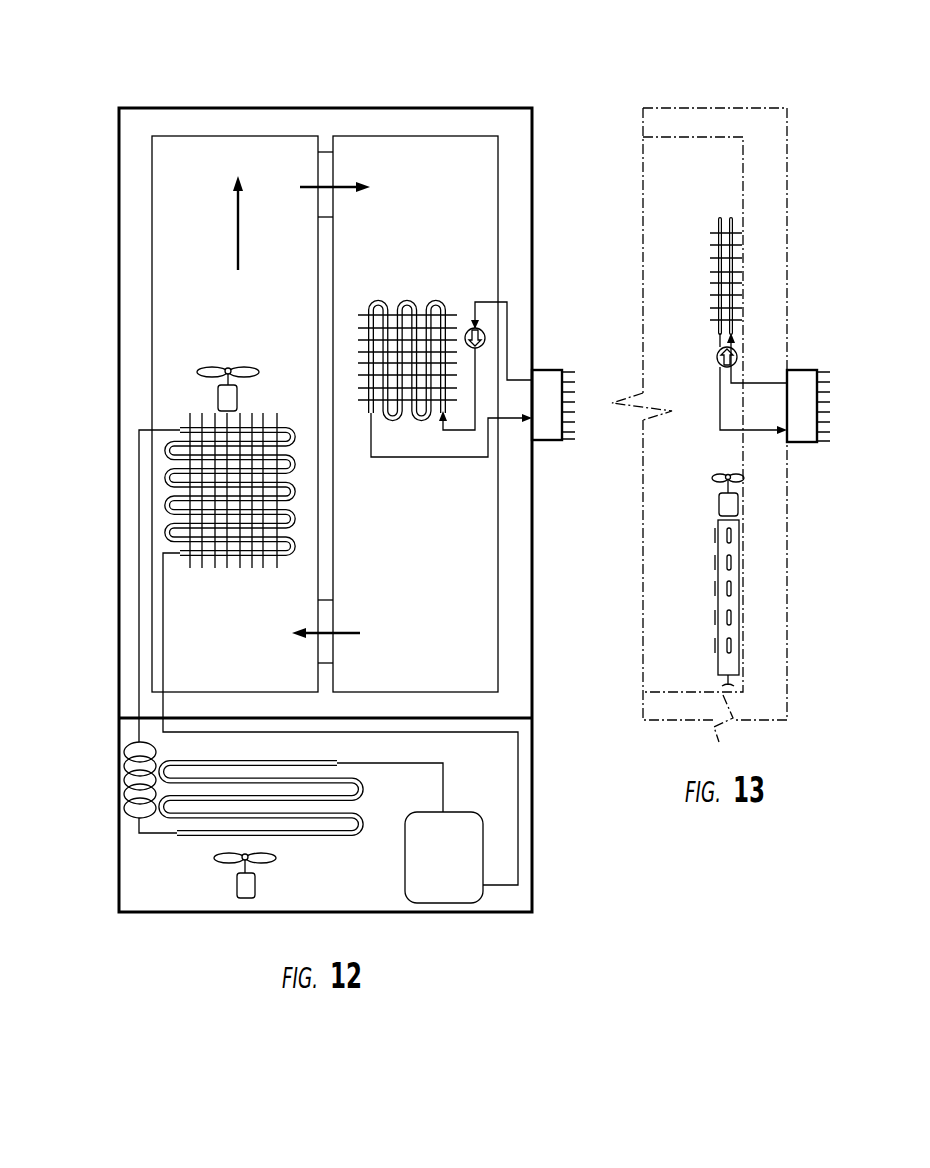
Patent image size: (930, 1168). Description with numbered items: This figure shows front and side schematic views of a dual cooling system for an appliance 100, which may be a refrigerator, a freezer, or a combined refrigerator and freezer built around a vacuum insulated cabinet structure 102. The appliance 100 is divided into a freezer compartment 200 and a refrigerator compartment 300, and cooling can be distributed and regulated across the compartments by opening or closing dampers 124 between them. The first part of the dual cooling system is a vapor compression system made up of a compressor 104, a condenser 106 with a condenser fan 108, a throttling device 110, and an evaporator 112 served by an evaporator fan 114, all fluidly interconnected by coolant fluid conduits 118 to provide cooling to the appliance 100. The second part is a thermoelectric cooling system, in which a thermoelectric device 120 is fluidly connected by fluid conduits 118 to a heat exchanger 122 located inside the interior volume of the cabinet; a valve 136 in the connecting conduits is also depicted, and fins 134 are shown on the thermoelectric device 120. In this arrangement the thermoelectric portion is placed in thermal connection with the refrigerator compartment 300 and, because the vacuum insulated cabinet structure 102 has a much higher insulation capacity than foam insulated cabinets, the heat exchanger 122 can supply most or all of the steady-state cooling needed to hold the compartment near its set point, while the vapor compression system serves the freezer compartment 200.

In FIG. 12, the appliance 100 is at (348, 76).
In FIG. 12, the freezer compartment 200 is at (187, 150).
In FIG. 12, the refrigerator compartment 300 is at (423, 162).
In FIG. 12, the dampers 124 is at (318, 205).
In FIG. 12, the evaporator fan 114 is at (218, 394).
In FIG. 12, the evaporator 112 is at (178, 498).
In FIG. 13, the evaporator 112 is at (741, 290).
In FIG. 12, the coolant fluid conduits 118 is at (139, 640).
In FIG. 12, the throttling device 110 is at (126, 798).
In FIG. 12, the condenser 106 is at (313, 836).
In FIG. 12, the compressor 104 is at (466, 873).
In FIG. 12, the condenser fan 108 is at (252, 898).
In FIG. 12, the heat exchanger 122 is at (437, 300).
In FIG. 12, the valve 136 is at (474, 318).
In FIG. 13, the valve 136 is at (716, 355).
In FIG. 12, the thermoelectric device 120 is at (549, 378).
In FIG. 13, the thermoelectric device 120 is at (805, 375).
In FIG. 12, the fins 134 is at (570, 442).
In FIG. 13, the fins 134 is at (827, 444).
In FIG. 13, the vacuum insulated cabinet structure 102 is at (787, 610).